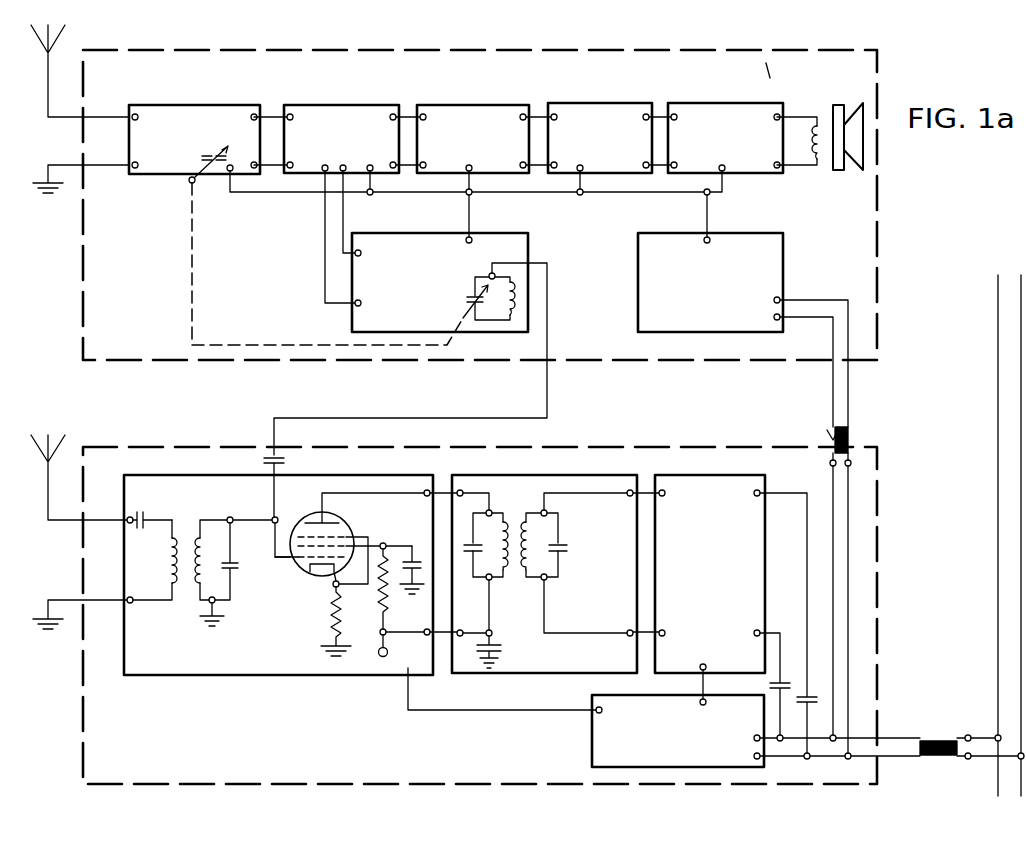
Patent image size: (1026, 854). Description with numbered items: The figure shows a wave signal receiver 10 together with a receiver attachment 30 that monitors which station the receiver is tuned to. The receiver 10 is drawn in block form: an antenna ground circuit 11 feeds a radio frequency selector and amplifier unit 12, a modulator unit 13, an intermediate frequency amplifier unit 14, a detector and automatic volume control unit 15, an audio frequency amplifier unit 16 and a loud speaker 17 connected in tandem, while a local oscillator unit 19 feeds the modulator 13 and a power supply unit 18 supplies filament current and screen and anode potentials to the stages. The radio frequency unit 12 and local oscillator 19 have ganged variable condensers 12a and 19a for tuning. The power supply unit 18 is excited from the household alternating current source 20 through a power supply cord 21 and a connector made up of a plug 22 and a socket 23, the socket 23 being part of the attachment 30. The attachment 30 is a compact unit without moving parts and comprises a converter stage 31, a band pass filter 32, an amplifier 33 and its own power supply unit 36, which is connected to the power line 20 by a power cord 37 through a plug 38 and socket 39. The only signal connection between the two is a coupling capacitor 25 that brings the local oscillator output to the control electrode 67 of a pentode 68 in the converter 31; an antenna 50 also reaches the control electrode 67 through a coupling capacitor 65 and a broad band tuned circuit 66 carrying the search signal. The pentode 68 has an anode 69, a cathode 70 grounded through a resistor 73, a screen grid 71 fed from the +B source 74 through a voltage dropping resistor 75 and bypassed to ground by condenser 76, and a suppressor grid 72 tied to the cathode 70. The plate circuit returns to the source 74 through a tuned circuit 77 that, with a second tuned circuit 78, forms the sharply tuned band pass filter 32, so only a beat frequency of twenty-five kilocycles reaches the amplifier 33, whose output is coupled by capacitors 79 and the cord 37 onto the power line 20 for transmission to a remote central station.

The wave signal receiver 10 is at (171, 52).
The antenna ground circuit 11 is at (66, 120).
The radio frequency selector and amplifier unit 12 is at (155, 110).
The variable condenser 12a is at (222, 177).
The modulator unit 13 is at (312, 110).
The intermediate frequency amplifier unit 14 is at (447, 110).
The detector and automatic volume control unit 15 is at (585, 110).
The audio frequency amplifier unit 16 is at (701, 110).
The loud speaker 17 is at (853, 110).
The power supply unit 18 is at (677, 237).
The local oscillator unit 19 is at (410, 332).
The variable condenser 19a is at (462, 304).
The alternating current source 20 is at (998, 426).
The power supply cord 21 is at (831, 392).
The plug 22 is at (838, 428).
The socket 23 is at (853, 430).
The coupling capacitor 25 is at (285, 459).
The receiver attachment 30 is at (130, 454).
The converter stage 31 is at (178, 482).
The band pass filter 32 is at (498, 484).
The amplifier 33 is at (686, 484).
The power supply unit 36 is at (608, 702).
The power cord 37 is at (885, 740).
The plug 38 is at (920, 738).
The socket 39 is at (935, 737).
The antenna 50 is at (70, 523).
The coupling capacitor 65 is at (147, 523).
The tuned circuit 66 is at (235, 566).
The control electrode 67 is at (292, 560).
The pentode 68 is at (340, 584).
The anode 69 is at (328, 521).
The cathode 70 is at (312, 570).
The screen grid 71 is at (350, 540).
The suppressor grid 72 is at (341, 544).
The resistor 73 is at (318, 621).
The source of +B potential 74 is at (380, 654).
The voltage dropping resistor 75 is at (380, 600).
The high frequency by pass condenser 76 is at (412, 556).
The tuned circuit 77 is at (478, 562).
The tuned circuit 78 is at (564, 563).
The coupling capacitors 79 is at (802, 692).